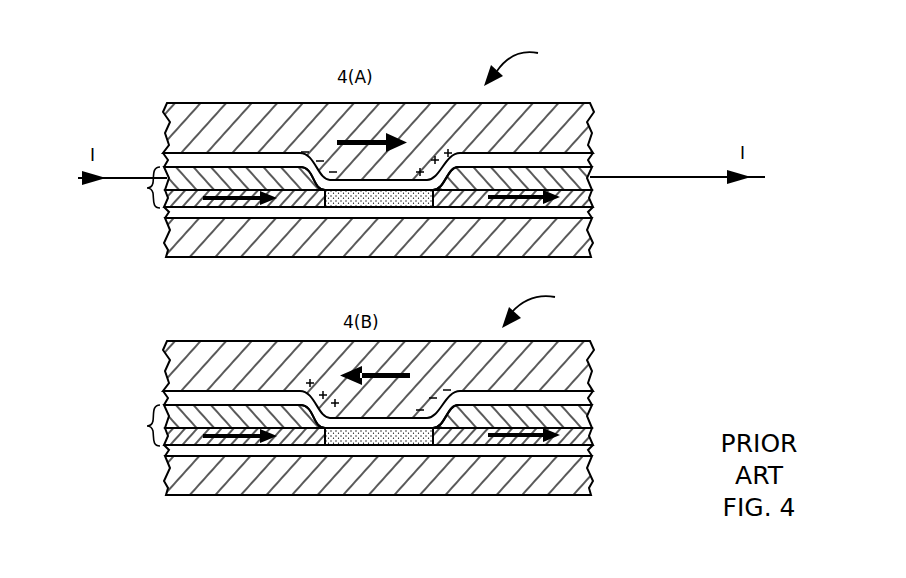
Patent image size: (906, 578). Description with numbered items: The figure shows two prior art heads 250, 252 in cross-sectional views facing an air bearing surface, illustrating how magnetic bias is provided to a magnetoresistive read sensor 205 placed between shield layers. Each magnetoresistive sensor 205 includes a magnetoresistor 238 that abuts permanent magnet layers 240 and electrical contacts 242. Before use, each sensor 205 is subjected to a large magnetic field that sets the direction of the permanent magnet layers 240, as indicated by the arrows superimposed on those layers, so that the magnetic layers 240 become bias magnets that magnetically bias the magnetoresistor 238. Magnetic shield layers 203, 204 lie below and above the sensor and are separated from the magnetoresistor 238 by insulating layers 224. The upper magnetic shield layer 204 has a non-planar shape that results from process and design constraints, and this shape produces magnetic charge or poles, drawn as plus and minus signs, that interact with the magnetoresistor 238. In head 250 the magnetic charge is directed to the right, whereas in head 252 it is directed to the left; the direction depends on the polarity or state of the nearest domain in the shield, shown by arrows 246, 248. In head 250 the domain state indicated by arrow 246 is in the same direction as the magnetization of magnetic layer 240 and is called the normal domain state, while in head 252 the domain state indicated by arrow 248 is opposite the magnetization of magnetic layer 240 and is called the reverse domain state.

The magnetic shield layer 203 is at (592, 243).
The magnetic shield layer 204 is at (592, 106).
The magnetoresistive sensor 205 is at (135, 306).
The insulating layer 224 is at (592, 150).
The magnetoresistor 238 is at (377, 207).
The permanent magnet layer 240 is at (592, 195).
The electrical contact 242 is at (592, 176).
The arrow 246 is at (363, 138).
The arrow 248 is at (360, 370).
The head 250 is at (529, 65).
The head 252 is at (547, 308).